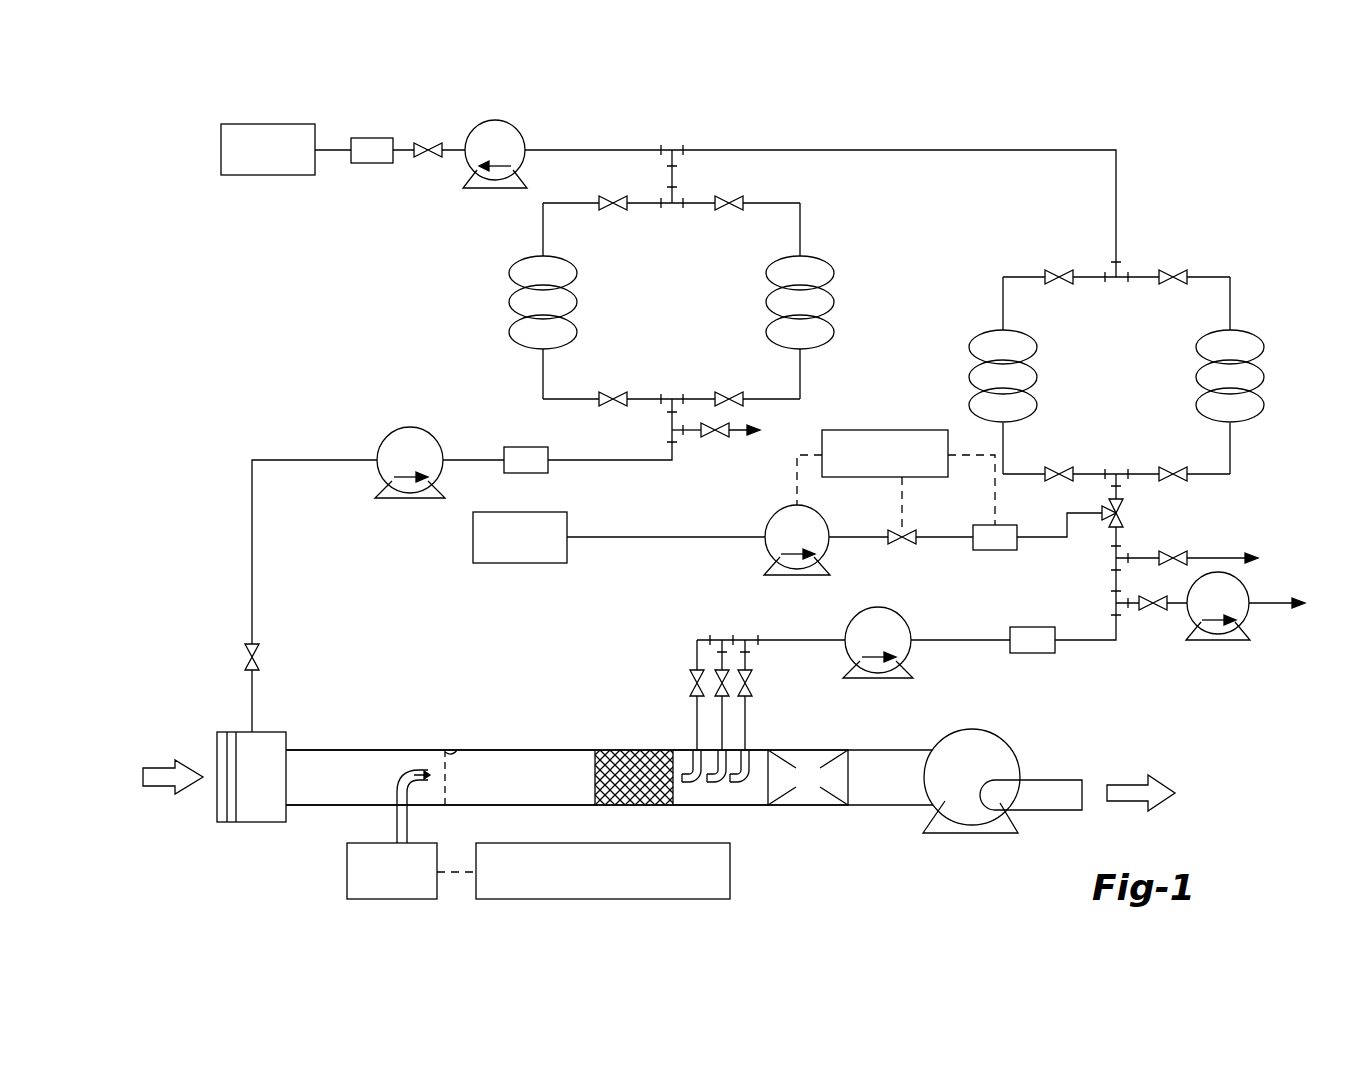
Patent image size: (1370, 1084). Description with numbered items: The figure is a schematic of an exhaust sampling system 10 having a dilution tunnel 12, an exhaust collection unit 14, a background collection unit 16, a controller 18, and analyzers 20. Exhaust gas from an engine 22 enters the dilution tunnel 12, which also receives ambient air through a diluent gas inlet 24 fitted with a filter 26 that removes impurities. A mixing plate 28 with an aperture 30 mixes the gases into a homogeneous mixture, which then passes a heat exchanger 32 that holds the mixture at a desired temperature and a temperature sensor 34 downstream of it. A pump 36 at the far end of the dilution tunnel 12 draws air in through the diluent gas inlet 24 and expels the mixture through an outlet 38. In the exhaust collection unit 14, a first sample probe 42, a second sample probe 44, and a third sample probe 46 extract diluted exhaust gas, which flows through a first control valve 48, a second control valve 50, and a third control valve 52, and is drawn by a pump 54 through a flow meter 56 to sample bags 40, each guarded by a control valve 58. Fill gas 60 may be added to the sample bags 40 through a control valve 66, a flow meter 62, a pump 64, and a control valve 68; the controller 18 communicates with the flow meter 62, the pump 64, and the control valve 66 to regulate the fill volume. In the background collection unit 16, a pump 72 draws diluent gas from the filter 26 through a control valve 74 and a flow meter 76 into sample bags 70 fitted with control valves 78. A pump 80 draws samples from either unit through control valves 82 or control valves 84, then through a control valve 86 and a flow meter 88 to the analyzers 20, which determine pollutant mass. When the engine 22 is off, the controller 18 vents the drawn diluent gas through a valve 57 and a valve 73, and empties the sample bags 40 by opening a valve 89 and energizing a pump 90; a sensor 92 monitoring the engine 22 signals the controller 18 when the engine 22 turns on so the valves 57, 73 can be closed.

The exhaust sampling system 10 is at (253, 331).
The dilution tunnel 12 is at (509, 750).
The exhaust collection unit 14 is at (1201, 270).
The background collection unit 16 is at (811, 207).
The controller 18 is at (917, 428).
The analyzers 20 is at (257, 122).
The engine 22 is at (375, 901).
The diluent gas inlet 24 is at (218, 742).
The filter 26 is at (268, 740).
The mixing plate 28 is at (446, 748).
The aperture 30 is at (440, 773).
The heat exchanger 32 is at (612, 748).
The temperature sensor 34 is at (812, 758).
The pump 36 is at (1005, 748).
The outlet 38 is at (1065, 790).
The sample bags 40 is at (985, 337).
The first sample probe 42 is at (690, 775).
The second sample probe 44 is at (718, 786).
The third sample probe 46 is at (745, 786).
The first control valve 48 is at (694, 672).
The second control valve 50 is at (721, 670).
The third control valve 52 is at (752, 672).
The pump 54 is at (891, 612).
The flow meter 56 is at (1033, 626).
The valve 57 is at (1178, 553).
The control valve 58 is at (1052, 478).
The fill gas 60 is at (555, 518).
The flow meter 62 is at (980, 524).
The pump 64 is at (781, 512).
The control valve 66 is at (904, 543).
The control valve 68 is at (1124, 509).
The sample bags 70 is at (520, 291).
The pump 72 is at (410, 428).
The valve 73 is at (715, 440).
The control valve 74 is at (246, 652).
The flow meter 76 is at (526, 446).
The control valves 78 is at (606, 392).
The pump 80 is at (514, 126).
The control valves 82 is at (1056, 272).
The control valves 84 is at (605, 198).
The control valve 86 is at (428, 142).
The flow meter 88 is at (366, 137).
The valve 89 is at (1150, 610).
The pump 90 is at (1225, 637).
The sensor 92 is at (690, 901).